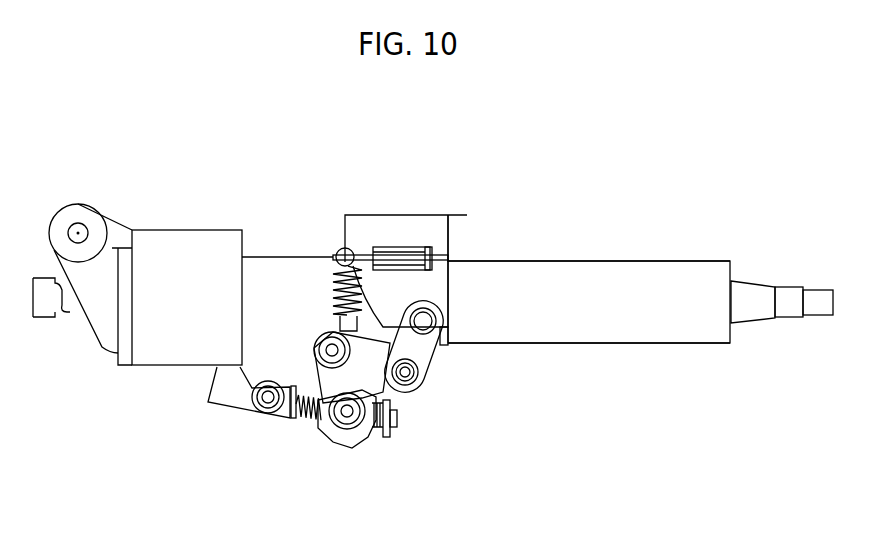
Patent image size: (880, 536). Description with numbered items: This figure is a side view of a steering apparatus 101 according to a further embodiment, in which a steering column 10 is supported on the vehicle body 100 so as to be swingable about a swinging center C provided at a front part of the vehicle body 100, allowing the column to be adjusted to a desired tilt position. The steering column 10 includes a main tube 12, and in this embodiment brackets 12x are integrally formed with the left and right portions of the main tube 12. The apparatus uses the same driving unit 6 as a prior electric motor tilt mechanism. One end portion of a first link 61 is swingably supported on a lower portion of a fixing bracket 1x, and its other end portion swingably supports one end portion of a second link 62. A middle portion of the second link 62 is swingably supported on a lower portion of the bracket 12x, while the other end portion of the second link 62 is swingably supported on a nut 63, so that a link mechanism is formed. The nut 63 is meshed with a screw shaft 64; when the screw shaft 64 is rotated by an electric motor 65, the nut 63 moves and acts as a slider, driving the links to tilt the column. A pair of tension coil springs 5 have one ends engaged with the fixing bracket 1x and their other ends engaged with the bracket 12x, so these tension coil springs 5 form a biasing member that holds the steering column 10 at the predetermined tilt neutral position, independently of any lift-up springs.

The swinging center C is at (80, 231).
The bracket 12x is at (257, 362).
The vehicle body 100 is at (467, 215).
The fixing bracket 1x is at (452, 247).
The tension coil springs 5 is at (340, 280).
The steering column 10 is at (646, 261).
The main tube 12 is at (588, 331).
The steering apparatus 101 is at (551, 368).
The first link 61 is at (431, 348).
The second link 62 is at (358, 372).
The nut 63 is at (357, 440).
The driving unit 6 is at (400, 427).
The screw shaft 64 is at (306, 420).
The electric motor 65 is at (233, 399).